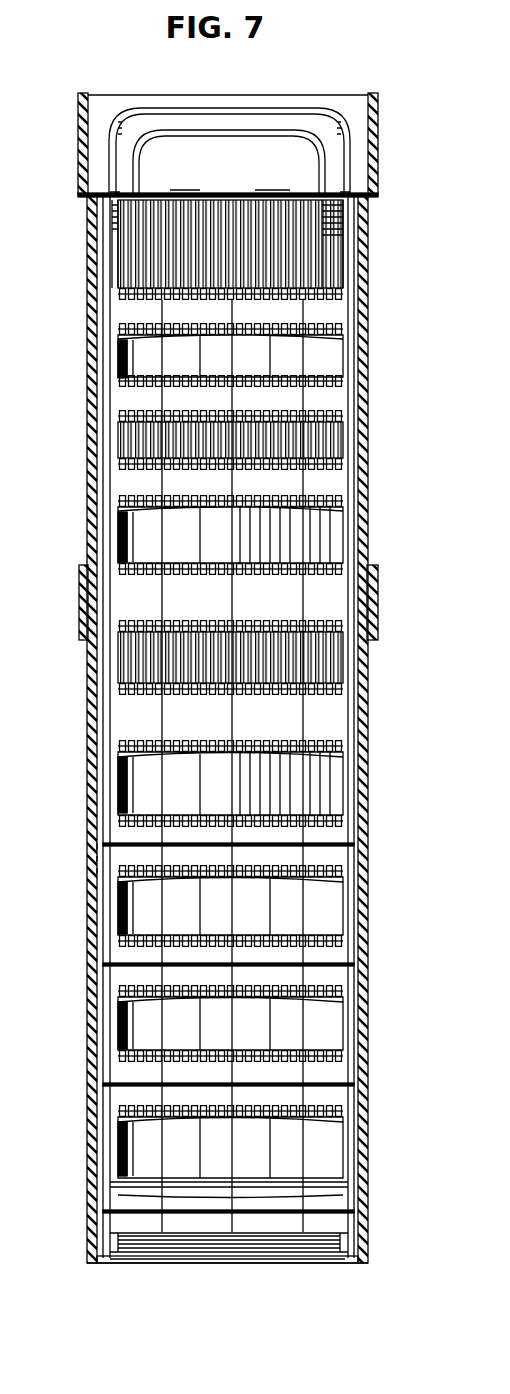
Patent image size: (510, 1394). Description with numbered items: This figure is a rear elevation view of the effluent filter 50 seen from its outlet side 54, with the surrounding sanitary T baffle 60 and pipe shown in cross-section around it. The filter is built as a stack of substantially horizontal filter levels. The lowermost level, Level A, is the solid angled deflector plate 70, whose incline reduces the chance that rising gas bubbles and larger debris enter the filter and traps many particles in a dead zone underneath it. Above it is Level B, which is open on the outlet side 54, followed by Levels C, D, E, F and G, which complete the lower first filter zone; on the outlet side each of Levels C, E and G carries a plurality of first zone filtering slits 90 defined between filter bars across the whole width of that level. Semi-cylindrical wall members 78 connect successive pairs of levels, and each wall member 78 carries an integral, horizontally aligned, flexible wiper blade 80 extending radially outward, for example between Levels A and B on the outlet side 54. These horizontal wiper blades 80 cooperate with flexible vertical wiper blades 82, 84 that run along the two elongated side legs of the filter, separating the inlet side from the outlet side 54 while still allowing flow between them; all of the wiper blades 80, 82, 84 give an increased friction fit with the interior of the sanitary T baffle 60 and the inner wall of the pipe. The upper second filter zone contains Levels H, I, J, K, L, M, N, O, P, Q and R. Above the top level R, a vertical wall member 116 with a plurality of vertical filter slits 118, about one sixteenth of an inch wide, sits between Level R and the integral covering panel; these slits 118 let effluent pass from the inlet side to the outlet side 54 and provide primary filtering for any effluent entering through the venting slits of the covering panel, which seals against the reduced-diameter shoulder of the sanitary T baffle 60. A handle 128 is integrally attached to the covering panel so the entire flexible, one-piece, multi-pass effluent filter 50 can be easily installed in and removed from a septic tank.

The effluent filter 50 is at (221, 101).
The outlet side 54 is at (234, 176).
The handle 128 is at (135, 120).
The sanitary T baffle 60 is at (360, 412).
The vertical filter slits 118 is at (170, 246).
The vertical wall member 116 is at (332, 272).
The filter level R is at (270, 290).
The filter level Q is at (155, 345).
The filter level P is at (148, 363).
The filter level O is at (300, 440).
The filter level N is at (310, 452).
The filter level M is at (305, 520).
The filter level L is at (150, 541).
The filter level K is at (322, 656).
The filter level J is at (310, 685).
The filter level I is at (170, 762).
The vertical wiper blade 84 is at (145, 790).
The filter level H is at (175, 797).
The vertical wiper blade 82 is at (352, 837).
The filter level G is at (290, 900).
The filter level F is at (150, 926).
The filter level E is at (140, 1006).
The semi-cylindrical wall member 78 is at (150, 1050).
The filter level D is at (160, 1060).
The first zone filtering slits 90 is at (310, 1110).
The filter level C is at (160, 1132).
The filter level B is at (150, 1192).
The wiper blade 80 is at (320, 1202).
The angled deflector plate 70 is at (305, 1252).